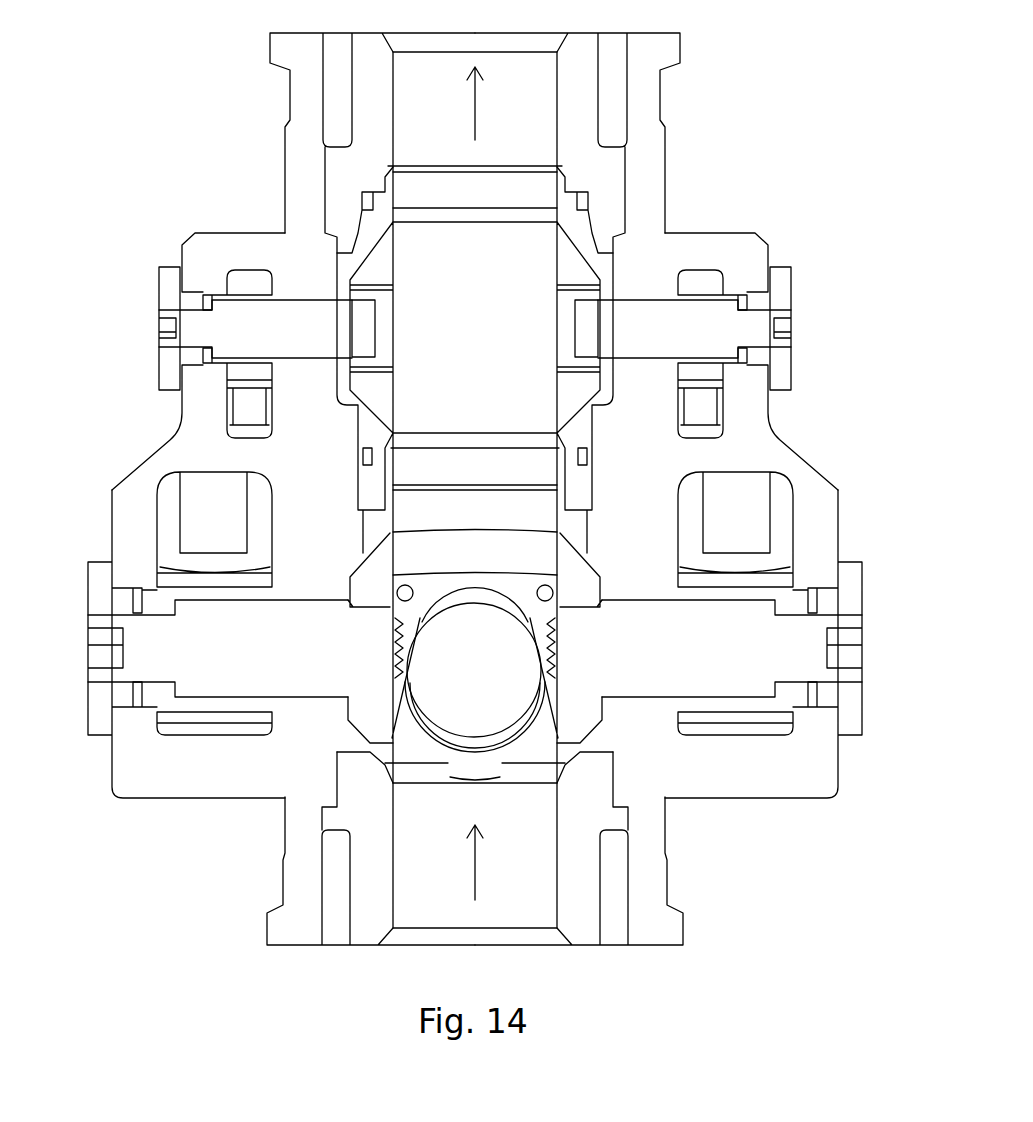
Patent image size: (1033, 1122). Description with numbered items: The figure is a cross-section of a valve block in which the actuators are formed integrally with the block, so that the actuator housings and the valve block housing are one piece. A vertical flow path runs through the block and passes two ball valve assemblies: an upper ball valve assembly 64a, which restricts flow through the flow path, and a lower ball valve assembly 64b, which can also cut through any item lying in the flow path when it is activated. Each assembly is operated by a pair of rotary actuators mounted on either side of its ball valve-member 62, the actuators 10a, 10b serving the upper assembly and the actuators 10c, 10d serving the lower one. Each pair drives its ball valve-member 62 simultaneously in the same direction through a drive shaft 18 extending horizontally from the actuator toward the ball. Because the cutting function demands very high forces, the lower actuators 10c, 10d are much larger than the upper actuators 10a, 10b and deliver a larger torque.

The actuator 10a is at (143, 212).
The actuator 10b is at (807, 210).
The actuator 10c is at (88, 773).
The actuator 10d is at (853, 460).
The drive structure or shaft 18 is at (331, 340).
The ball valve-member 62 is at (567, 400).
The upper ball valve assembly 64a is at (635, 247).
The lower ball valve assembly 64b is at (617, 740).